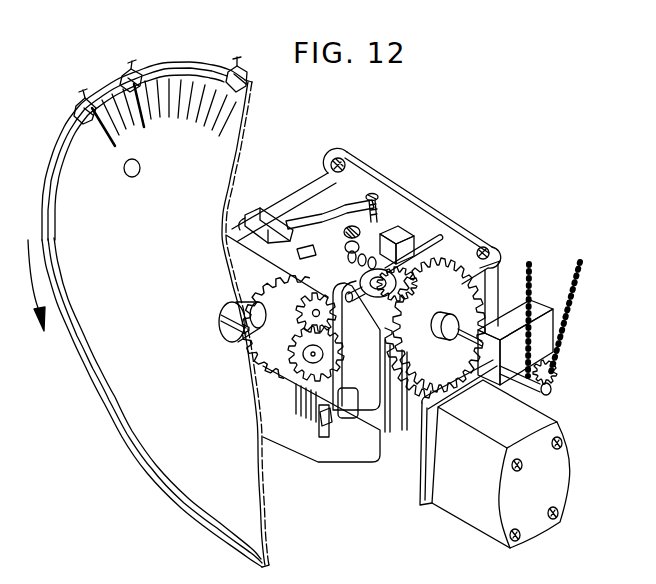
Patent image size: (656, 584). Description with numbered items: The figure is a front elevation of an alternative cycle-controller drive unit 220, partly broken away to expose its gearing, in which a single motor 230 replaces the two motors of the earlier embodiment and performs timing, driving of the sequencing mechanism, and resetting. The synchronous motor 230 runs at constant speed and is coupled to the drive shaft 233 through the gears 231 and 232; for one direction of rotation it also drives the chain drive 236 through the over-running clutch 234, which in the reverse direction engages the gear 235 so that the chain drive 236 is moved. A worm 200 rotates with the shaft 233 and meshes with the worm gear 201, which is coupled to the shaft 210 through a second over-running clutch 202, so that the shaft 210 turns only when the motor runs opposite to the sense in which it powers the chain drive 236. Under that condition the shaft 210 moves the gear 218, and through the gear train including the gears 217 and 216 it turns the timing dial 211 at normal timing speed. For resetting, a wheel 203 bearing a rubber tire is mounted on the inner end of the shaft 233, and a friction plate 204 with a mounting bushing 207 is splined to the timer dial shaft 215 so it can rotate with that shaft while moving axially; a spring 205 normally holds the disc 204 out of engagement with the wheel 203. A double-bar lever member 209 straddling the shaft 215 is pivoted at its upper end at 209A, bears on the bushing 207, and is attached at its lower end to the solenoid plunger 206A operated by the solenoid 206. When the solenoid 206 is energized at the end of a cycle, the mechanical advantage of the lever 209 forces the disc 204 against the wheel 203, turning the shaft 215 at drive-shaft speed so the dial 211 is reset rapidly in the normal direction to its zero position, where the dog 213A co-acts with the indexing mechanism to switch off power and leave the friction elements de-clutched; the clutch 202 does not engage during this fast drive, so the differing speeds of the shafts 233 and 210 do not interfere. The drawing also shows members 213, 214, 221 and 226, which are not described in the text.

The worm 200 is at (397, 318).
The worm gear 201 is at (428, 253).
The second over-running clutch 202 is at (382, 300).
The wheel 203 is at (354, 292).
The friction plate 204 is at (333, 229).
The spring 205 is at (366, 246).
The solenoid 206 is at (343, 421).
The solenoid plunger 206A is at (322, 418).
The mounting bushing 207 is at (336, 382).
The double-bar lever member 209 is at (320, 408).
The pivot 209A is at (322, 242).
The shaft 210 is at (440, 248).
The timing dial 211 is at (247, 499).
The clip 213 is at (126, 76).
The dog 213A is at (78, 101).
The knob 214 is at (230, 338).
The timer dial shaft 215 is at (232, 311).
The gear 216 is at (297, 346).
The gear 217 is at (306, 362).
The gear 218 is at (308, 305).
The alternative drive unit 220 is at (299, 178).
The screw 221 is at (380, 197).
The block 226 is at (386, 236).
The motor 230 is at (560, 466).
The gear 231 is at (421, 428).
The gear 232 is at (470, 289).
The drive shaft 233 is at (552, 390).
The over-running clutch 234 is at (557, 373).
The gear 235 is at (552, 361).
The chain drive 236 is at (568, 313).